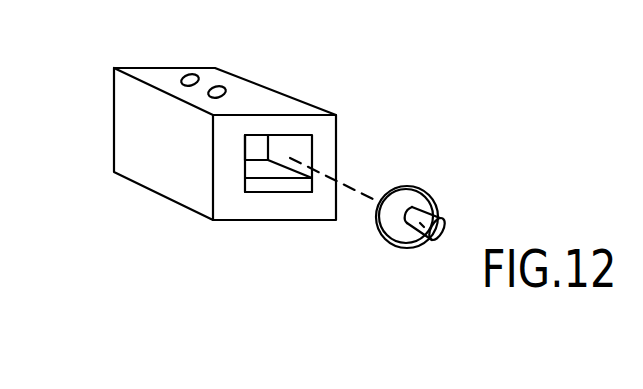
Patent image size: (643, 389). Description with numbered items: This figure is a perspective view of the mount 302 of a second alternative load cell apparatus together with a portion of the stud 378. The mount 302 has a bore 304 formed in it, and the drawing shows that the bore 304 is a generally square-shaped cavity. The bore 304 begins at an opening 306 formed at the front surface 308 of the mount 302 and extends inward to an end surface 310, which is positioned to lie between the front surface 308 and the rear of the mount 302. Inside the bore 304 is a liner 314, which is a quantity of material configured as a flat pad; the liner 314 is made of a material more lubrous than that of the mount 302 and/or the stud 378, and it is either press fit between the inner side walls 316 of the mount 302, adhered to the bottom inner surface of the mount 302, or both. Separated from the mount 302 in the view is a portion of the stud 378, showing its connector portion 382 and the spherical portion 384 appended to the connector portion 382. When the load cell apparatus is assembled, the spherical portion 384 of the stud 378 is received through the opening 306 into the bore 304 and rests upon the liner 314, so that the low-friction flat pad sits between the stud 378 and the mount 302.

The mount 302 is at (138, 153).
The bore 304 is at (308, 147).
The opening 306 is at (297, 145).
The front surface 308 is at (327, 167).
The end surface 310 is at (253, 148).
The liner 314 is at (256, 168).
The inner side walls 316 is at (288, 153).
The stud 378 is at (446, 237).
The connector portion 382 is at (415, 235).
The spherical portion 384 is at (385, 235).